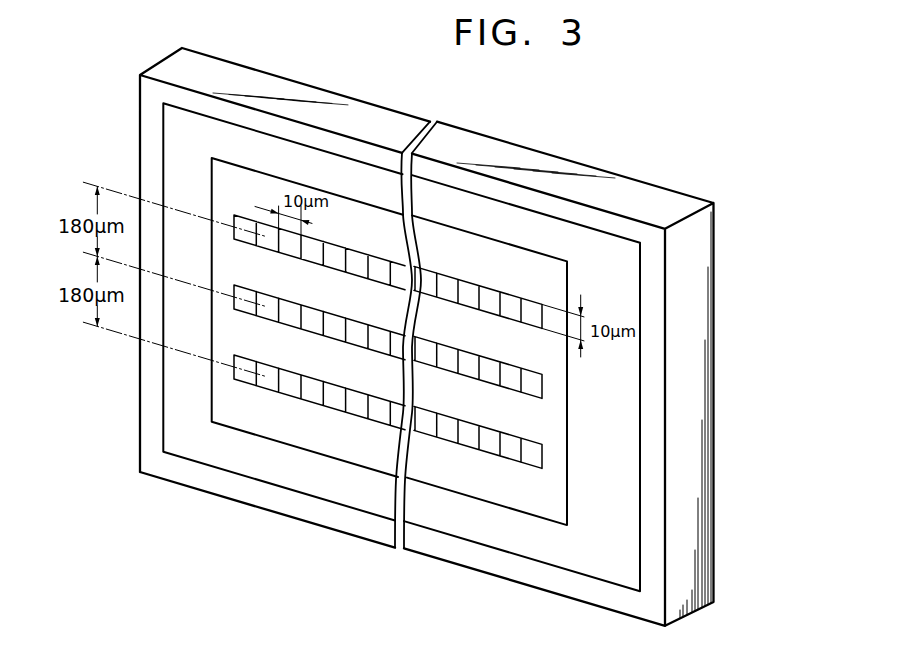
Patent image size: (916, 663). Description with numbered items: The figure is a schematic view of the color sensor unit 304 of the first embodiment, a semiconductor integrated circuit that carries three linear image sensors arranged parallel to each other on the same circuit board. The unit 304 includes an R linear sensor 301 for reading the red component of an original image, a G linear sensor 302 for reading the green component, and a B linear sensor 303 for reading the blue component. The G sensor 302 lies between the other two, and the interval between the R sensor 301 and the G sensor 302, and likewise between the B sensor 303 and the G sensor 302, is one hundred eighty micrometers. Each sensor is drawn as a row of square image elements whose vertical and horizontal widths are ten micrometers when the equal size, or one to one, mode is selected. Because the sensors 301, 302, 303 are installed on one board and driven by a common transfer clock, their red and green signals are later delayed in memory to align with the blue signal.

The R linear sensor 301 is at (546, 306).
The G linear sensor 302 is at (546, 387).
The B linear sensor 303 is at (546, 460).
The color sensor unit 304 is at (711, 203).